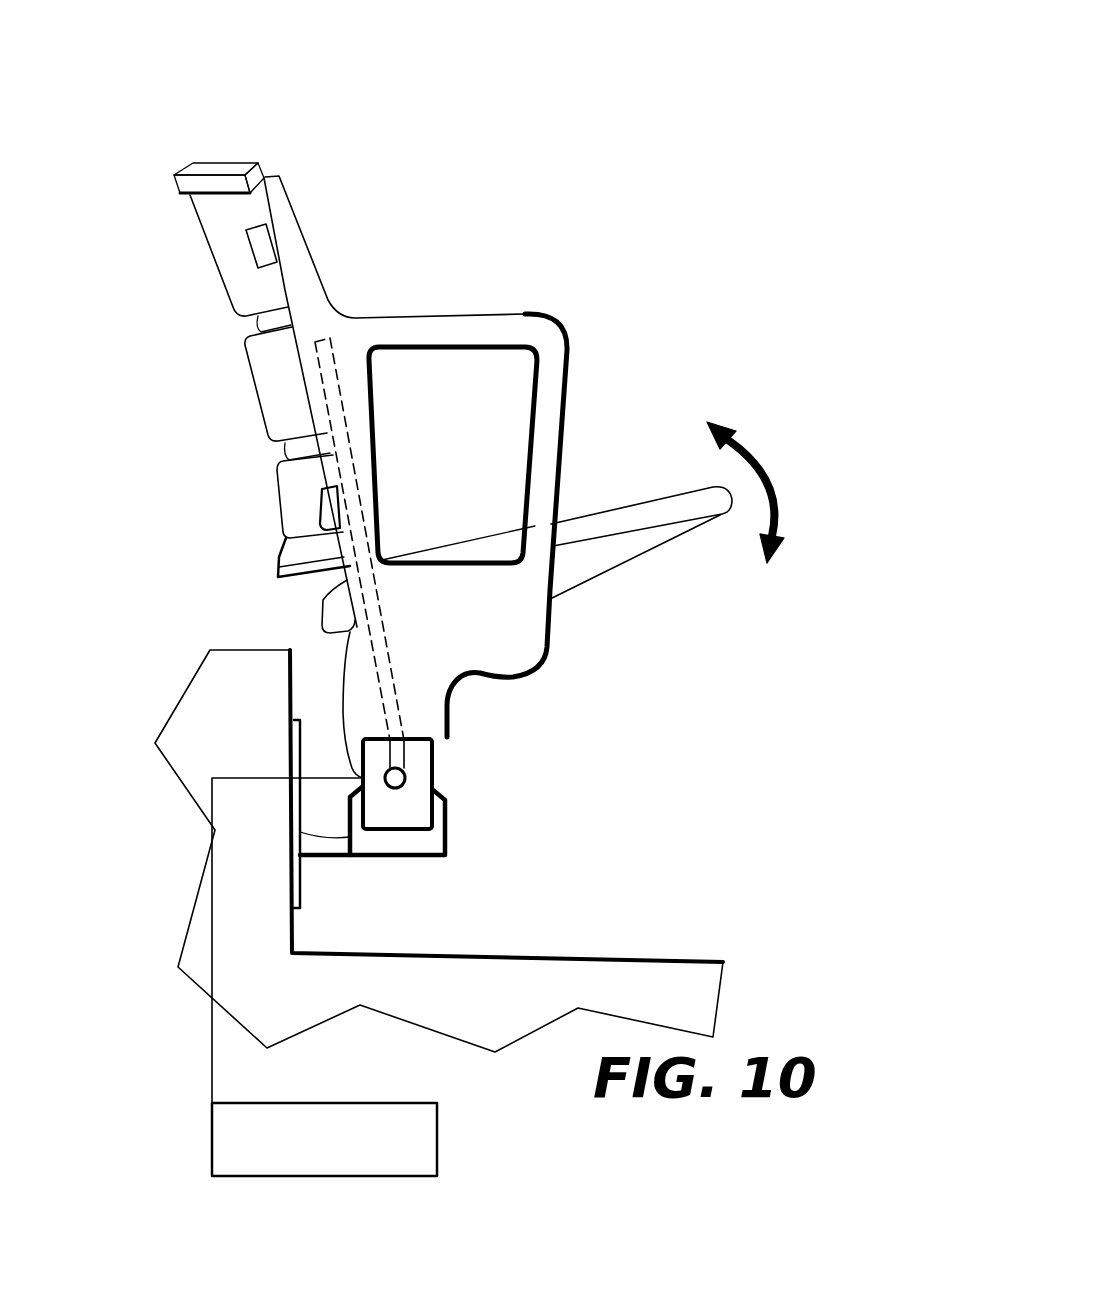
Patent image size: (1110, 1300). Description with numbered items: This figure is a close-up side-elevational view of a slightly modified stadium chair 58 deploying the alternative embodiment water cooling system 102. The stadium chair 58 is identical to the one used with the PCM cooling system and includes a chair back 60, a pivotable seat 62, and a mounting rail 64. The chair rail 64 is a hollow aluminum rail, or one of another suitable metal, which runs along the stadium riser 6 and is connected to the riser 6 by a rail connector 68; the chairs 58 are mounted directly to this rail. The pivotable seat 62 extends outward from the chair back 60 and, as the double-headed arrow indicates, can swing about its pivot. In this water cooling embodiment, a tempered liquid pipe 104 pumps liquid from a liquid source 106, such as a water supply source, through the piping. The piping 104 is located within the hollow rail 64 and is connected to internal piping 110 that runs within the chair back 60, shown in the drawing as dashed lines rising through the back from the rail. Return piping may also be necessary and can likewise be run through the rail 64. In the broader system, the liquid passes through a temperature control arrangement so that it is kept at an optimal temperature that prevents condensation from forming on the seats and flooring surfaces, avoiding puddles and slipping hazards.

The riser 6 is at (230, 650).
The stadium chair 58 is at (124, 154).
The chair back 60 is at (297, 215).
The pivotable seat 62 is at (653, 490).
The chair rail 64 is at (433, 737).
The rail connector 68 is at (363, 860).
The water cooling system 102 is at (688, 60).
The tempered liquid pipe 104 is at (406, 773).
The liquid source 106 is at (324, 1139).
The internal piping 110 is at (384, 620).